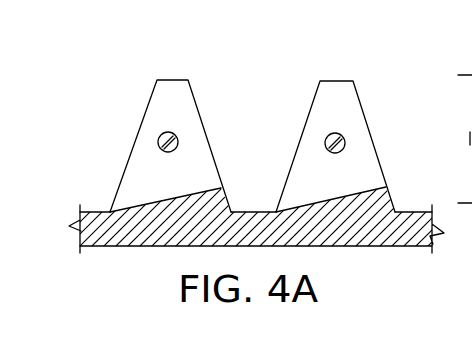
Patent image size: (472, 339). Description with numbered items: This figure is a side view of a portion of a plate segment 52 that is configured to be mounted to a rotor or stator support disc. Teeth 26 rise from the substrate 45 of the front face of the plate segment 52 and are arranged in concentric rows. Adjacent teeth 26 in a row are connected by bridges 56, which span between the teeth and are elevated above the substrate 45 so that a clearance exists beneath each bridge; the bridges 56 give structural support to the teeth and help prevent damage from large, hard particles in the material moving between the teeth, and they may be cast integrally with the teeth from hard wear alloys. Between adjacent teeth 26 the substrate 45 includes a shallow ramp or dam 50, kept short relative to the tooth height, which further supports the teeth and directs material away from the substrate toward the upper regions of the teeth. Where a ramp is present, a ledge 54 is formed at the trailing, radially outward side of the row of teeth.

The teeth 26 is at (173, 80).
The substrate 45 is at (413, 211).
The ramp or dam 50 is at (123, 208).
The plate segment 52 is at (77, 218).
The ledge 54 is at (228, 196).
The bridges 56 is at (158, 143).